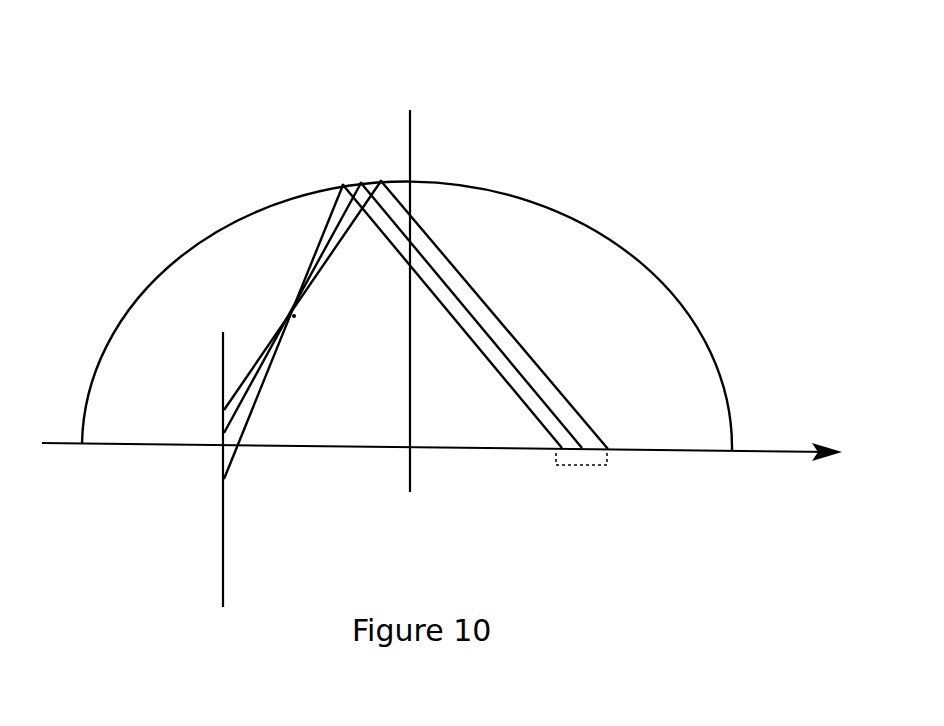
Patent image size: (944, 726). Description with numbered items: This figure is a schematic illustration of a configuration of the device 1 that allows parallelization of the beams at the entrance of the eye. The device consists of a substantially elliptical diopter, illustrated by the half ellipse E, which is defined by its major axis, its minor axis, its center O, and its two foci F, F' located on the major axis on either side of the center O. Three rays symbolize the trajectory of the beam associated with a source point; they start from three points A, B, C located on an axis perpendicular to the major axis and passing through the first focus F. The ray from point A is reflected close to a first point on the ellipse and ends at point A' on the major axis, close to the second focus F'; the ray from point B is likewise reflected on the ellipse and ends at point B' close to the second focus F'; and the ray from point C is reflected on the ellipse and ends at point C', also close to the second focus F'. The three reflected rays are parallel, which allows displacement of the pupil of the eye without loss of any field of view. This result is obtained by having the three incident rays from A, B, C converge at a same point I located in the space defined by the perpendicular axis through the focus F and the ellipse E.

The optical imaging system 1 is at (548, 140).
The half ellipse E is at (590, 226).
The source point A is at (279, 295).
The source point B is at (269, 308).
The source point C is at (260, 347).
The end point A' is at (511, 315).
The end point B' is at (492, 315).
The end point C' is at (468, 316).
The convergence point I is at (283, 316).
The first focus F is at (217, 463).
The second focus F' is at (569, 464).
The center O is at (393, 464).